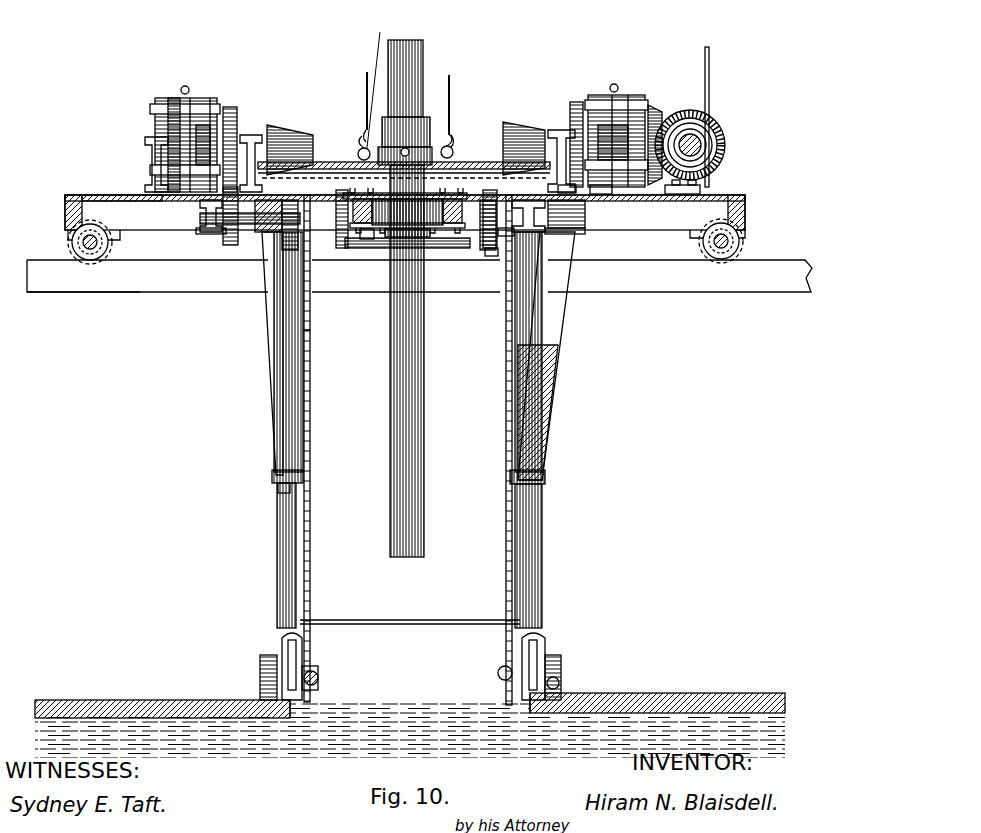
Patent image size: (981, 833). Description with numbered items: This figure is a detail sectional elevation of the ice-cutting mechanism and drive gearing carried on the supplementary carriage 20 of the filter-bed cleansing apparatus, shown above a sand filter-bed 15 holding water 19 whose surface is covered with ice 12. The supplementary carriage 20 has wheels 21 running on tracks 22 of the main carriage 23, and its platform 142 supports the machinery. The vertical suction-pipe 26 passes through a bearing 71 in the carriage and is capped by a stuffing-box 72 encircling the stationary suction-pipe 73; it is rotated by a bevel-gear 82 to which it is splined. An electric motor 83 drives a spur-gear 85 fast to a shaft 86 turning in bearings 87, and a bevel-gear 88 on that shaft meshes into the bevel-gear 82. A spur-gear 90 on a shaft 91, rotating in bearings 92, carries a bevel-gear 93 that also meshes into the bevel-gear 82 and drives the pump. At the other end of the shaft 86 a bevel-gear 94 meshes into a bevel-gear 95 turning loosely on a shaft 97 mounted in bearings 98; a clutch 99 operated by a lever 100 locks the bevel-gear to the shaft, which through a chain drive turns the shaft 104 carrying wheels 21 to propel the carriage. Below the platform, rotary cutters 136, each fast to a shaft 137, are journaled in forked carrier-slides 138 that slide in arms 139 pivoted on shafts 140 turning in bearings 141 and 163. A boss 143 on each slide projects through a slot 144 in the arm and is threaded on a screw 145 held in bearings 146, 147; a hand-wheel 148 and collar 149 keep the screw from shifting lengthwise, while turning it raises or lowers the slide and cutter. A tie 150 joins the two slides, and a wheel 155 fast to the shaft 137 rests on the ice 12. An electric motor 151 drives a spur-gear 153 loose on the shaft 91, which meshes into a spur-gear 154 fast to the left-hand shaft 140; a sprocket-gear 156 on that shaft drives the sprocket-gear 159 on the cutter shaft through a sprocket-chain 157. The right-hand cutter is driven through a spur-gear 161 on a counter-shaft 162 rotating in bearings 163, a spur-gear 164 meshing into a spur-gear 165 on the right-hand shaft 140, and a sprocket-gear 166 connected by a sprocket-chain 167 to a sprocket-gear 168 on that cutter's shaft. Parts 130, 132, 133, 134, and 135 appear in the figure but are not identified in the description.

The ice 12 is at (410, 712).
The sand filter-bed 15 is at (410, 736).
The water 19 is at (294, 735).
The supplementary carriage 20 is at (730, 203).
The wheels 21 is at (68, 240).
The tracks 22 is at (700, 262).
The main carriage 23 is at (132, 294).
The vertical suction-pipe 26 is at (424, 478).
The bearing 71 is at (430, 240).
The stuffing-box 72 is at (420, 118).
The stationary suction-pipe 73 is at (408, 42).
The bevel-gear 82 is at (318, 163).
The electric motor 83 is at (635, 100).
The spur-gear 85 is at (578, 102).
The shaft 86 is at (608, 128).
The bearings 87 is at (562, 130).
The bevel-gear 88 is at (560, 185).
The spur-gear 90 is at (154, 126).
The shaft 91 is at (204, 126).
The bearings 92 is at (250, 136).
The bevel-gear 93 is at (300, 125).
The bevel-gear 94 is at (655, 112).
The bevel-gear 95 is at (722, 130).
The shaft 97 is at (712, 145).
The bearings 98 is at (690, 194).
The clutch 99 is at (700, 165).
The lever 100 is at (318, 188).
The shaft 104 is at (726, 247).
The rod 130 is at (367, 76).
The hook 132 is at (366, 125).
The eye 133 is at (358, 152).
The link rod 134 is at (368, 81).
The lower collar 135 is at (432, 156).
The rotary cutters 136 is at (284, 645).
The shaft 137 is at (318, 680).
The forked carrier-slide 138 is at (278, 598).
The arm 139 is at (270, 410).
The shaft 140 is at (205, 232).
The bearings 141 is at (212, 234).
The platform 142 is at (112, 196).
The boss 143 is at (272, 478).
The slot 144 is at (540, 340).
The screw 145 is at (288, 432).
The bearing 146 is at (280, 492).
The bearing 147 is at (262, 226).
The hand-wheel 148 is at (298, 200).
The collar 149 is at (268, 234).
The tie 150 is at (398, 620).
The electric motor 151 is at (176, 120).
The spur-gear 153 is at (236, 110).
The spur-gear 154 is at (230, 248).
The wheel 155 is at (260, 672).
The sprocket-gear 156 is at (300, 235).
The sprocket-chain 157 is at (312, 443).
The sprocket-gear 159 is at (316, 668).
The spur-gear 161 is at (366, 242).
The counter-shaft 162 is at (458, 250).
The bearings 163 is at (340, 252).
The spur-gear 164 is at (492, 258).
The spur-gear 165 is at (525, 160).
The sprocket-gear 166 is at (514, 234).
The sprocket-chain 167 is at (506, 546).
The sprocket-gear 168 is at (500, 670).